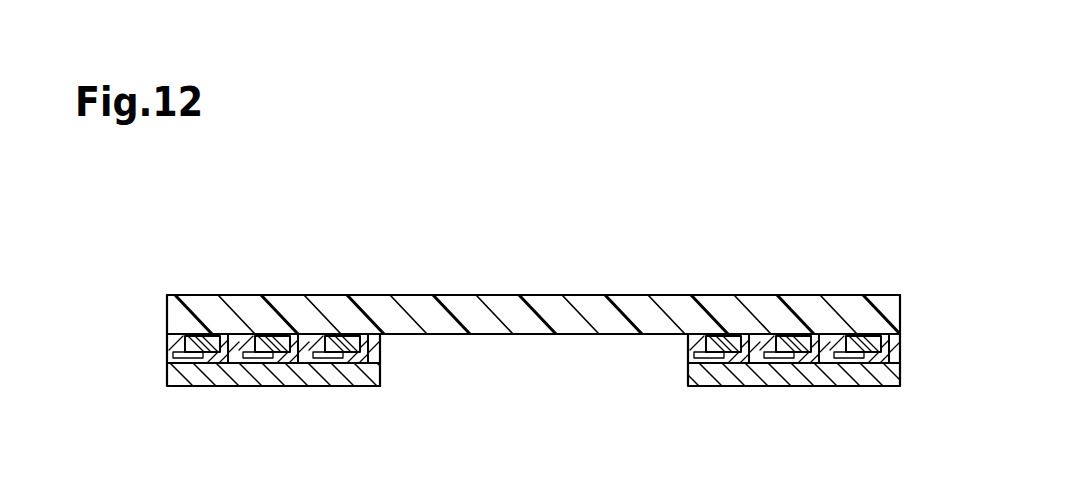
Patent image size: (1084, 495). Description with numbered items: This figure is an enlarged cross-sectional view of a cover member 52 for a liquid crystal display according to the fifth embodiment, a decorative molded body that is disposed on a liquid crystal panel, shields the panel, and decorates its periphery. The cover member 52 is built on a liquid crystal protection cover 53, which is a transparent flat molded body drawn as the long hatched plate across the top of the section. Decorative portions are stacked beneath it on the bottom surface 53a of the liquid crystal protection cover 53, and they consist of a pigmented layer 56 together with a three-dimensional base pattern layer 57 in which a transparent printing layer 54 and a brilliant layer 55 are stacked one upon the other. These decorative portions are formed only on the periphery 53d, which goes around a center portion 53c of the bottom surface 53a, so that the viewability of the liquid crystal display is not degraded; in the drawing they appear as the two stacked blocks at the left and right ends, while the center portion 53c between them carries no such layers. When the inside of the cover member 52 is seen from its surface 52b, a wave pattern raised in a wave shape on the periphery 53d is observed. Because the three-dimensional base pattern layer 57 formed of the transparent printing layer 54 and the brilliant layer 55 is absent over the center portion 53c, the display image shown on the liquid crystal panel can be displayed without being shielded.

The cover member for a liquid crystal display 52 is at (737, 172).
The surface 52b is at (365, 295).
The liquid crystal protection cover 53 is at (902, 297).
The bottom surface 53a is at (577, 335).
The center portion 53c is at (532, 295).
The periphery 53d is at (195, 295).
The transparent printing layer 54 is at (167, 322).
The brilliant layer 55 is at (167, 347).
The pigmented layer 56 is at (167, 378).
The three-dimensional base pattern layer 57 is at (92, 290).